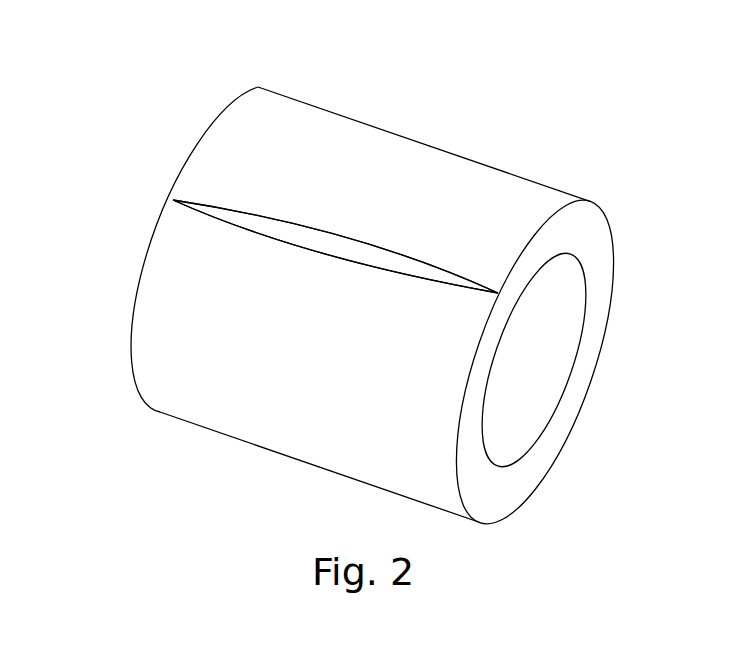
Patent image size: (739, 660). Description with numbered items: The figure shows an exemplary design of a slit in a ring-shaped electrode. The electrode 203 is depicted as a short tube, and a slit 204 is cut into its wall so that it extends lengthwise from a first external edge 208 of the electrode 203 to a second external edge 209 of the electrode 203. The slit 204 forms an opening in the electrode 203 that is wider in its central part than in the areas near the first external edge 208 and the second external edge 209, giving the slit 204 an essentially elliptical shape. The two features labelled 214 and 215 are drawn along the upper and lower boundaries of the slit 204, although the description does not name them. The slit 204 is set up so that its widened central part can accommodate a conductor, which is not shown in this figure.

The electrode 203 is at (490, 190).
The slit 204 is at (367, 240).
The first external edge 208 is at (145, 260).
The second external edge 209 is at (563, 213).
The first slot edge 214 is at (324, 230).
The second slot edge 215 is at (323, 257).